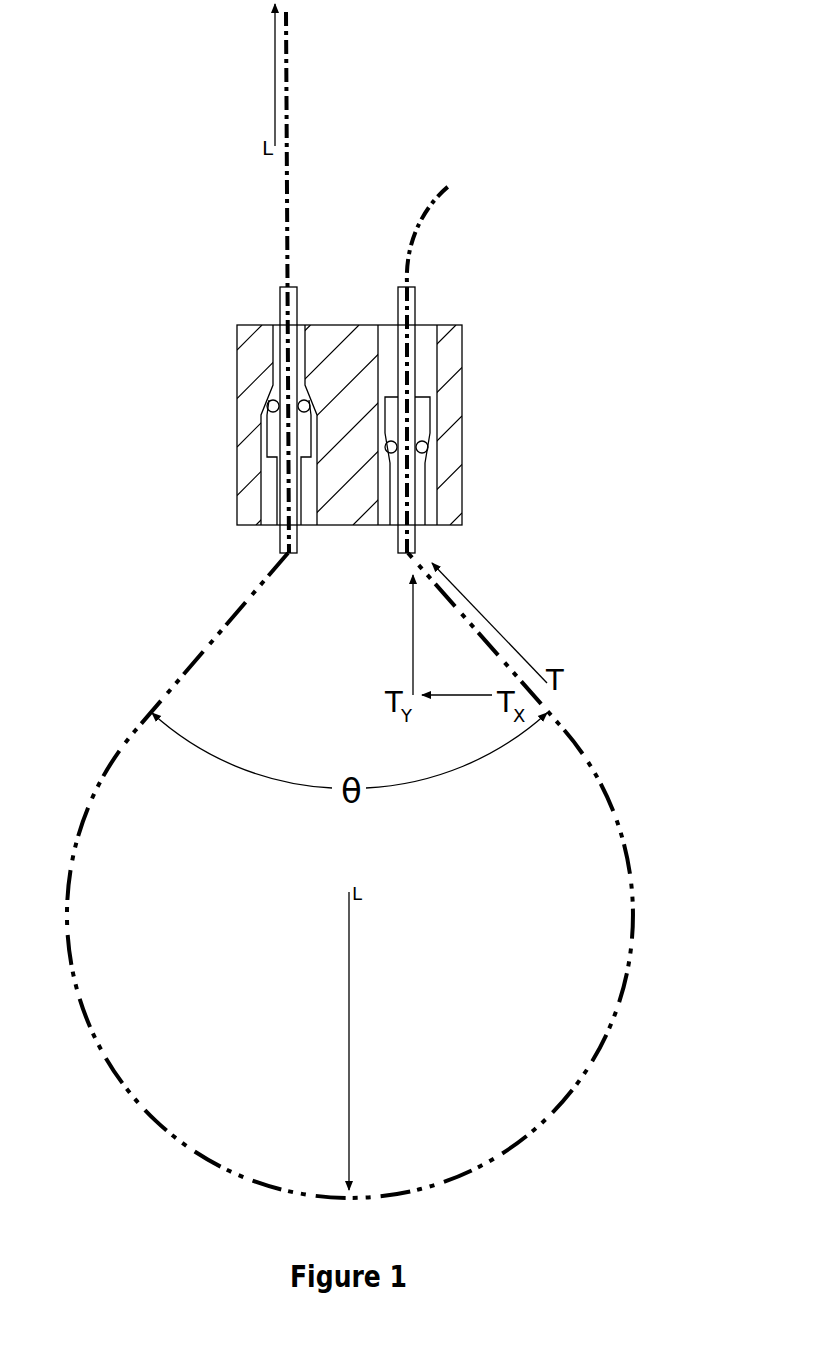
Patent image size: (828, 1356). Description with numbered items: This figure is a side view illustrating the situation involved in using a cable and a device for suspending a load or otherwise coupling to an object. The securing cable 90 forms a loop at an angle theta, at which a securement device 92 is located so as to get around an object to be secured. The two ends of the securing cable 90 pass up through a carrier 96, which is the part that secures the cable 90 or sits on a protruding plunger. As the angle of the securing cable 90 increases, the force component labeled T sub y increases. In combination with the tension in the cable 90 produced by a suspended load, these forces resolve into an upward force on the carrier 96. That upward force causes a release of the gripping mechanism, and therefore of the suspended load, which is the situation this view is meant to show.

The securement device 92 is at (427, 282).
The carrier 96 is at (447, 410).
The securing cable 90 is at (608, 793).